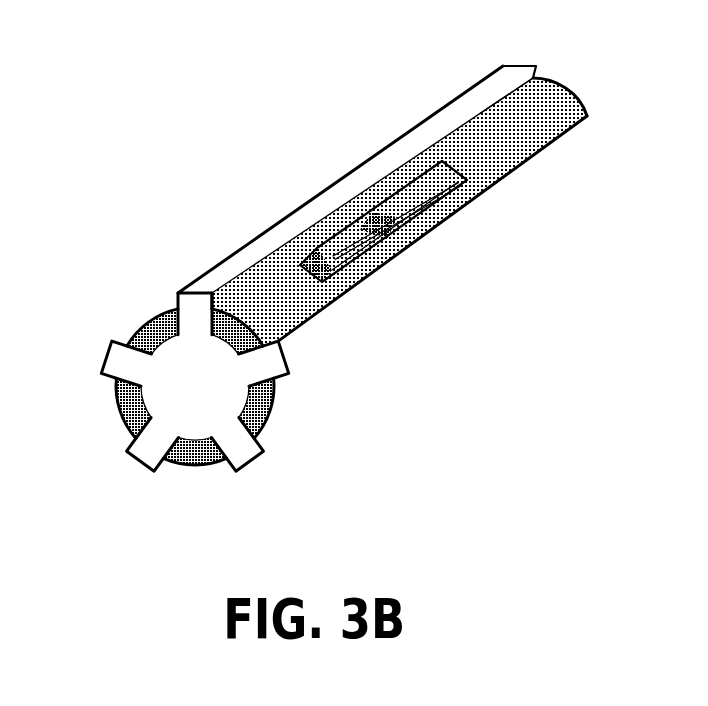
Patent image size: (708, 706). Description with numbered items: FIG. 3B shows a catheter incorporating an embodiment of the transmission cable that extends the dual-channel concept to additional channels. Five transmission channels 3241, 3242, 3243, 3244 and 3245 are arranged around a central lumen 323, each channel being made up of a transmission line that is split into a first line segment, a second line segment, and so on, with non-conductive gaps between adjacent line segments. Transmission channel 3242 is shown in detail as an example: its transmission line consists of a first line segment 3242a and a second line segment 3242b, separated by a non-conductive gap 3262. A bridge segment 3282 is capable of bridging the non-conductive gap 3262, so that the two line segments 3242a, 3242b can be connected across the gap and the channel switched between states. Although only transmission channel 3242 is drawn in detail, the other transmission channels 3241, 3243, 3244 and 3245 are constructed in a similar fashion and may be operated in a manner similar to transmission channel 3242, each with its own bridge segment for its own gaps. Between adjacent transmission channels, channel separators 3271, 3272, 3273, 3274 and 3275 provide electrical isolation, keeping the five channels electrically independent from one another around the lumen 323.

The lumen 323 is at (175, 397).
The transmission channel 3241 is at (146, 327).
The transmission channel 3242 is at (556, 100).
The first line segment 3242a is at (295, 304).
The second line segment 3242b is at (530, 134).
The transmission channel 3243 is at (272, 414).
The transmission channel 3244 is at (196, 464).
The transmission channel 3245 is at (124, 413).
The non-conductive gap 3262 is at (355, 246).
The channel separator 3271 is at (212, 287).
The channel separator 3272 is at (282, 366).
The channel separator 3273 is at (246, 455).
The channel separator 3274 is at (145, 455).
The channel separator 3275 is at (115, 359).
The bridge segment 3282 is at (418, 200).